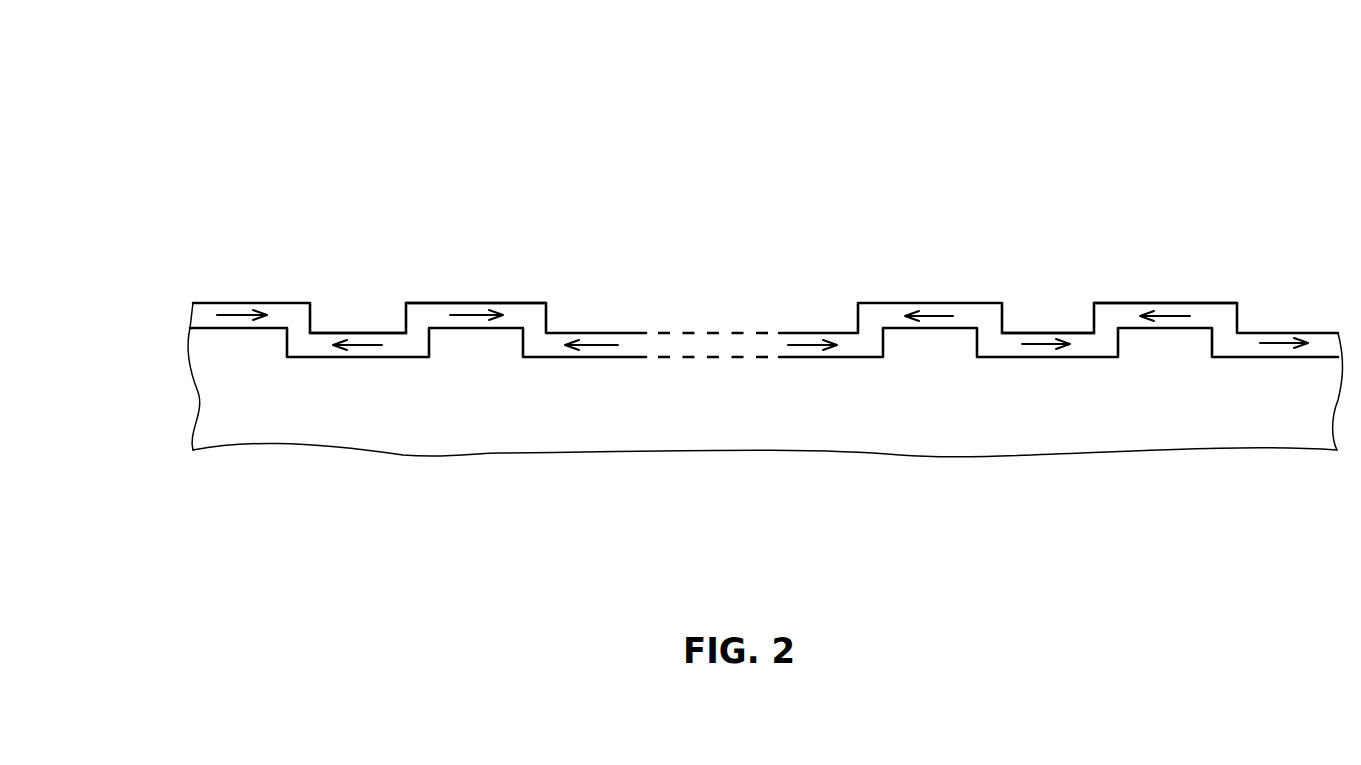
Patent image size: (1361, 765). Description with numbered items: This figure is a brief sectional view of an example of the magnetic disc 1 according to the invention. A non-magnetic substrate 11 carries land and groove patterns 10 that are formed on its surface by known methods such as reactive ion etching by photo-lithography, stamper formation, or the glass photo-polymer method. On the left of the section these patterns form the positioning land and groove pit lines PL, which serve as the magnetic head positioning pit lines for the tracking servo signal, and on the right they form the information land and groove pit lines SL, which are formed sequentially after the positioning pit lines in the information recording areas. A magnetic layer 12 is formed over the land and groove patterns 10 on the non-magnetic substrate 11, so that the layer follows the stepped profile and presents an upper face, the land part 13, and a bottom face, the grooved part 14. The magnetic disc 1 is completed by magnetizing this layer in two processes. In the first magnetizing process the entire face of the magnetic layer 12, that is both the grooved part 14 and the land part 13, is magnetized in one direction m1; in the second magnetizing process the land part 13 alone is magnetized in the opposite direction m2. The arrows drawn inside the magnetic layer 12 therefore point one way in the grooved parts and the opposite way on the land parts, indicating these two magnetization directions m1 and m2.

The magnetic disc 1 is at (205, 81).
The land and groove patterns 10 is at (487, 235).
The non-magnetic substrate 11 is at (250, 435).
The magnetic layer 12 is at (862, 345).
The upper face (land part) 13 is at (467, 303).
The bottom face (grooved part) 14 is at (328, 332).
The positioning land and groove pit lines PL is at (185, 188).
The information land and groove pit lines SL is at (1248, 212).
The first magnetizing direction m1 is at (1040, 347).
The second magnetizing direction m2 is at (930, 320).